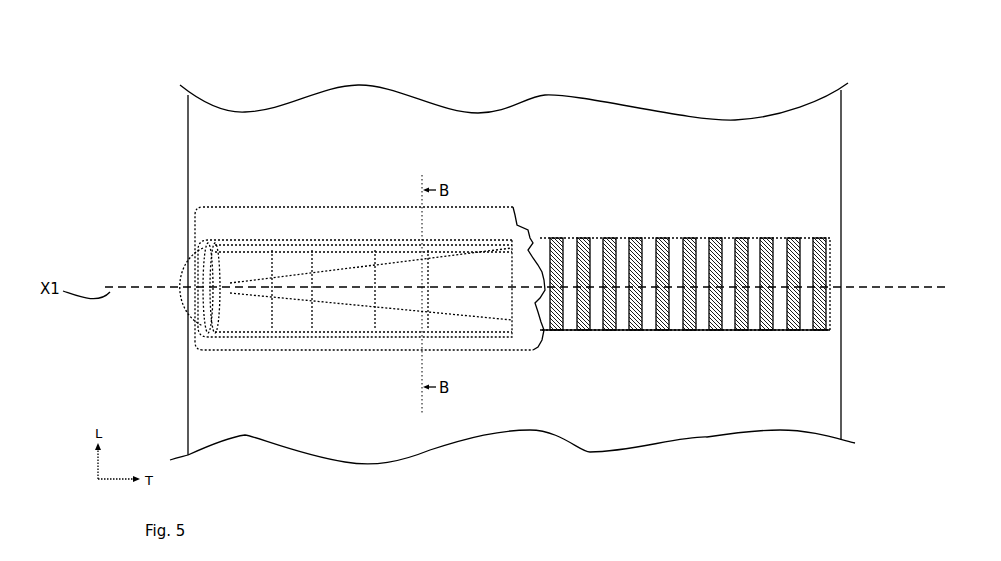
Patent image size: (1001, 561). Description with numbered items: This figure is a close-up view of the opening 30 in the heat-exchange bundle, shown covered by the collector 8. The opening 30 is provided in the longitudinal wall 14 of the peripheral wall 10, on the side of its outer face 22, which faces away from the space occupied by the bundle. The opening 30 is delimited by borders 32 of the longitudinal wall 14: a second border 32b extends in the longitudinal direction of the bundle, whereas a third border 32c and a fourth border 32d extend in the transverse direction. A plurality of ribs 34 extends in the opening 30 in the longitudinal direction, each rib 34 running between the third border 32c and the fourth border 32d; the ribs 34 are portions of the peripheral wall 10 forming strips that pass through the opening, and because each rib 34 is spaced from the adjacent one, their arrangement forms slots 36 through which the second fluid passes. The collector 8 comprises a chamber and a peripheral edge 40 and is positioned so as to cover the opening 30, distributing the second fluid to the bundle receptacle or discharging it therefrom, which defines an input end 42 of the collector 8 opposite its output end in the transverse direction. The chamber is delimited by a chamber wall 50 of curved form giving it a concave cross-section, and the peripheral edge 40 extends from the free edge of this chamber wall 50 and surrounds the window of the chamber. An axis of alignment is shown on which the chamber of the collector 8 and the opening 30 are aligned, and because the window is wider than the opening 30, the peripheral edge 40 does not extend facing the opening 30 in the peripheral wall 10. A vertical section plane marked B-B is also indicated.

The collector 8 is at (250, 248).
The peripheral wall 10 is at (495, 244).
The longitudinal wall 14 is at (717, 157).
The outer face 22 is at (473, 137).
The opening 30 is at (751, 288).
The borders 32 is at (756, 238).
The second border 32b is at (832, 248).
The third border 32c is at (650, 238).
The fourth border 32d is at (751, 330).
The rib 34 is at (708, 330).
The slots 36 is at (650, 330).
The peripheral edge 40 is at (345, 212).
The input end 42 is at (186, 268).
The chamber wall 50 is at (242, 307).